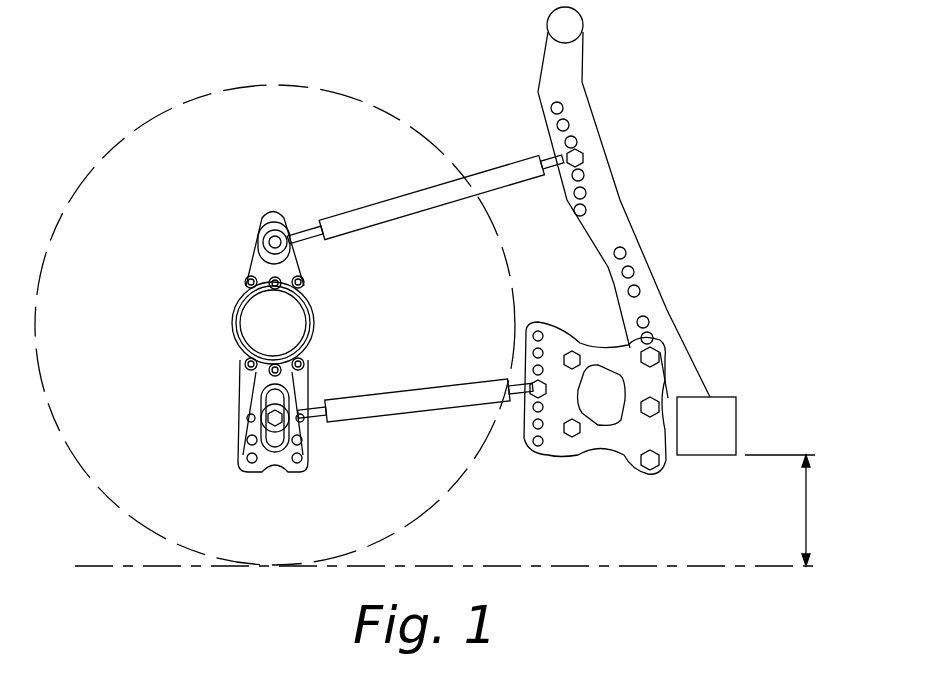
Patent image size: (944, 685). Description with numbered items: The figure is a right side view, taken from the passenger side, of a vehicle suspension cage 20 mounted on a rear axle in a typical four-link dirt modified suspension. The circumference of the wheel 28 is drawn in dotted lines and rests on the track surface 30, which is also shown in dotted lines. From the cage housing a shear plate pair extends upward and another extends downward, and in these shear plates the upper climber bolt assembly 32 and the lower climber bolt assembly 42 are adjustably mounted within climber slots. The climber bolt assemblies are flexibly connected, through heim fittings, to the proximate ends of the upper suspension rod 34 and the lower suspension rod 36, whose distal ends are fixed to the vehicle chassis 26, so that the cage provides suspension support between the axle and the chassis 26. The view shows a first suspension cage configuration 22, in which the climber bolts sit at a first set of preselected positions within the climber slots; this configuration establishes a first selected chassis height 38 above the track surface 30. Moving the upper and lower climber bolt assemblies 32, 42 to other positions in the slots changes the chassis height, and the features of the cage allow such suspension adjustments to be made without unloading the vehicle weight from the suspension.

The vehicle suspension cage 20 is at (200, 323).
The first suspension cage configuration 22 is at (315, 324).
The chassis 26 is at (628, 207).
The wheel 28 is at (106, 151).
The track surface 30 is at (530, 565).
The upper climber bolt assembly 32 is at (263, 241).
The upper suspension rod 34 is at (398, 200).
The lower suspension rod 36 is at (452, 388).
The first selected chassis height 38 is at (807, 512).
The lower climber bolt assembly 42 is at (262, 413).